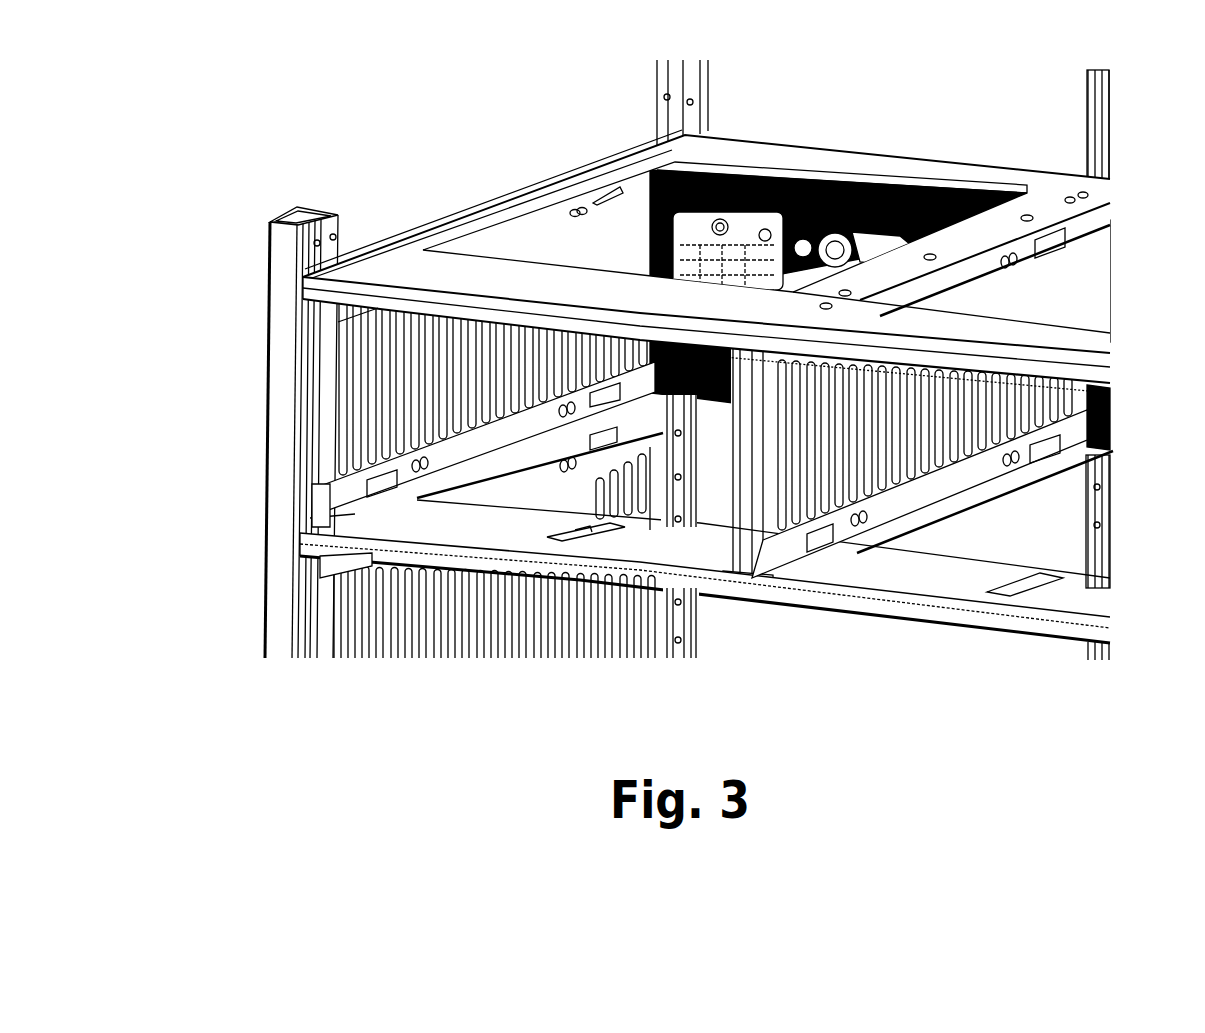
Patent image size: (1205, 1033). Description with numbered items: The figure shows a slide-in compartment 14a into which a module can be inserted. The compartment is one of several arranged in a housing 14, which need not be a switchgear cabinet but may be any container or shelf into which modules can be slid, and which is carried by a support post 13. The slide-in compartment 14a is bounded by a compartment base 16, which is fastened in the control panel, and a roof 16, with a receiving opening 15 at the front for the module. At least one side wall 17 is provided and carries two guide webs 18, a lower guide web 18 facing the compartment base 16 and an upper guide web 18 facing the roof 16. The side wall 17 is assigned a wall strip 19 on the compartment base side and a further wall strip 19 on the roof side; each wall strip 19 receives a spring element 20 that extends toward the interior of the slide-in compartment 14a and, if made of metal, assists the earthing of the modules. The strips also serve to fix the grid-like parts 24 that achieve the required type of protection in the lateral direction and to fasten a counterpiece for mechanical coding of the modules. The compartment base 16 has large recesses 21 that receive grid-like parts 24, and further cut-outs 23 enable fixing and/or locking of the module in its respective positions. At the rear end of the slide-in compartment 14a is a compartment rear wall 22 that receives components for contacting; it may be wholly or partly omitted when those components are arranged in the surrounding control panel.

The support post 13 is at (280, 592).
The housing 14 is at (265, 205).
The slide-in compartment 14a is at (262, 427).
The receiving opening 15 is at (353, 395).
The compartment base, roof 16 is at (423, 273).
The side wall 17 is at (327, 458).
The guide web 18 is at (352, 513).
The wall strip 19 is at (340, 315).
The spring element 20 is at (617, 193).
The recess 21 is at (660, 487).
The compartment rear wall 22 is at (742, 175).
The cut-out 23 is at (560, 540).
The grid-like part 24 is at (370, 348).